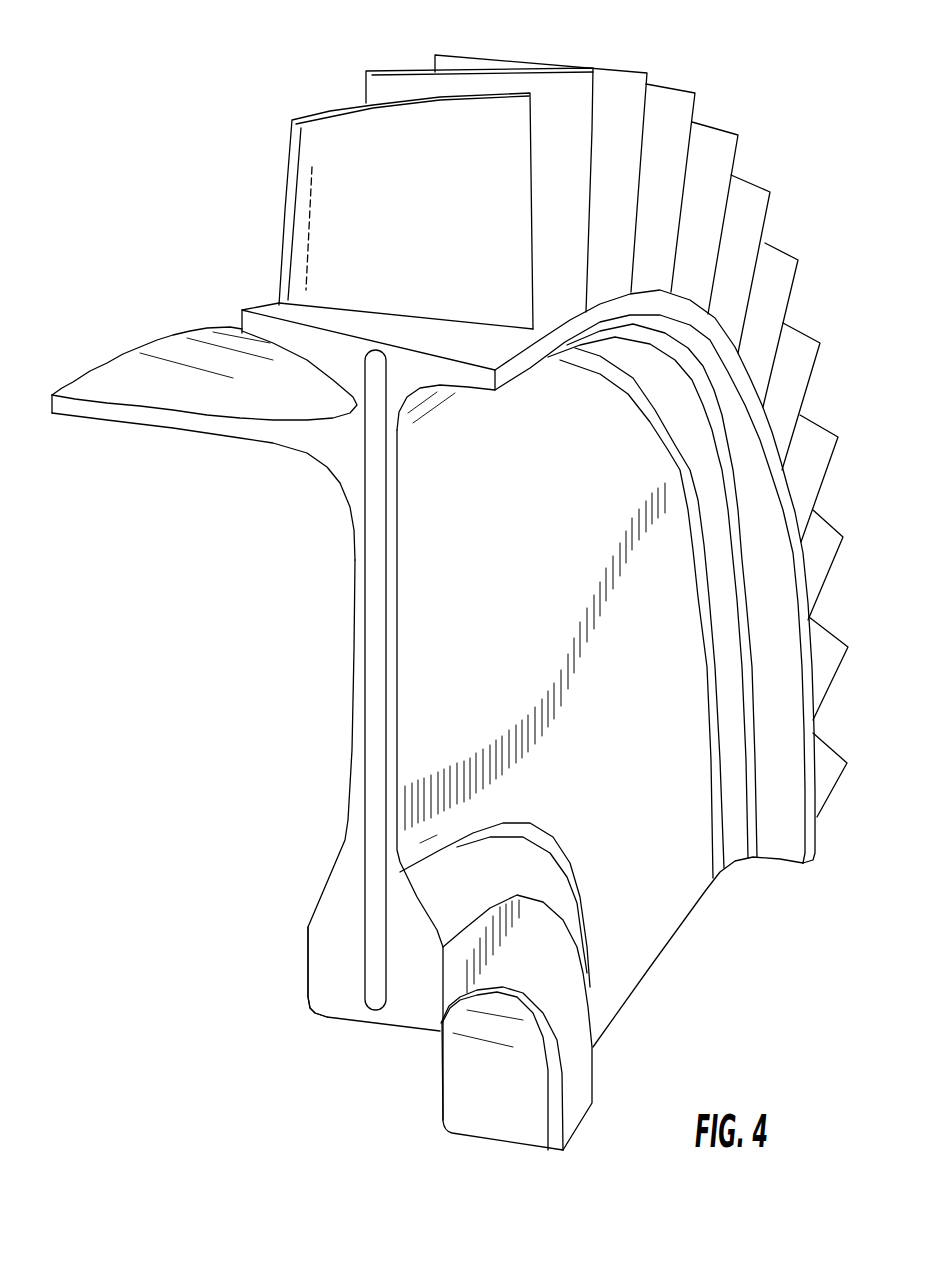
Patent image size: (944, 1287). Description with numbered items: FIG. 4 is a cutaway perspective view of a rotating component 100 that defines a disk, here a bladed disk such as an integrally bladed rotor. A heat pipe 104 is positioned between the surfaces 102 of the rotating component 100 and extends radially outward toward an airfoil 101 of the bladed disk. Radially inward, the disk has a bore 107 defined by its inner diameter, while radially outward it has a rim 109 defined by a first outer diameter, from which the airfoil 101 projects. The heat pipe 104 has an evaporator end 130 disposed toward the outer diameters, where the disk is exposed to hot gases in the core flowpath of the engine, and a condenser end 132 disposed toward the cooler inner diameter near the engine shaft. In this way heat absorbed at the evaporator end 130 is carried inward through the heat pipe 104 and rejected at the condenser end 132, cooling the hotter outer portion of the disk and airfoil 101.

The rotating component 100 is at (450, 591).
The airfoil 101 is at (289, 170).
The surface 102 is at (552, 588).
The heat pipe 104 is at (387, 672).
The bore 107 is at (466, 1053).
The rim 109 is at (468, 382).
The evaporator end 130 is at (206, 262).
The condenser end 132 is at (276, 1019).